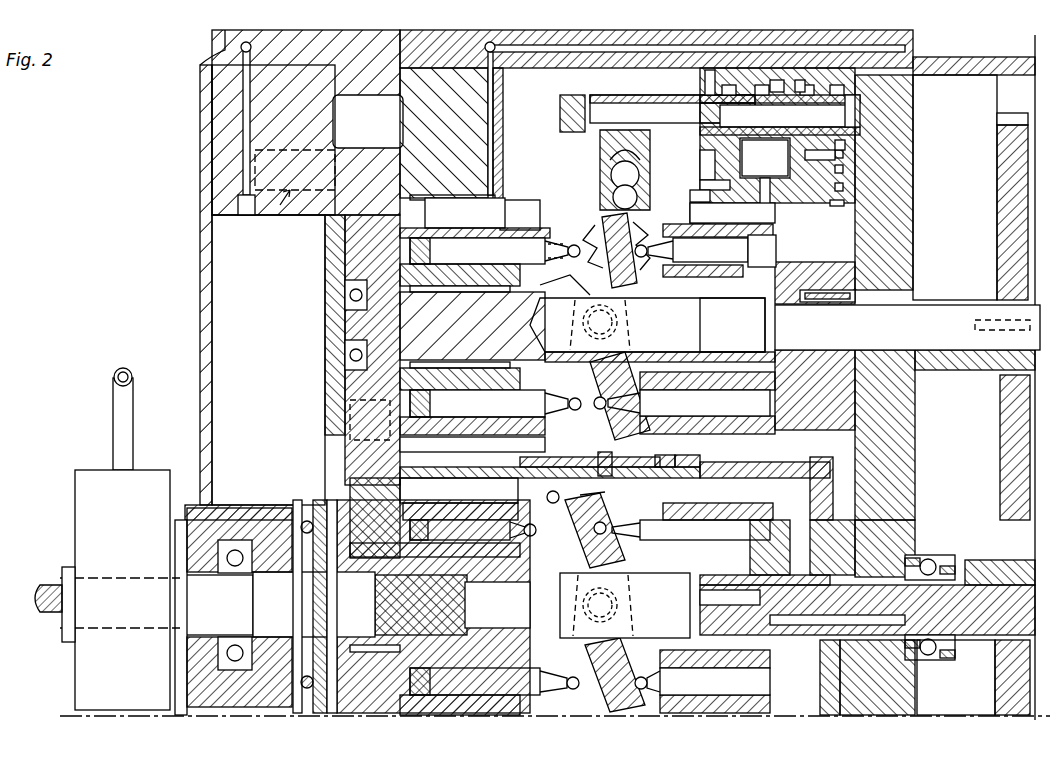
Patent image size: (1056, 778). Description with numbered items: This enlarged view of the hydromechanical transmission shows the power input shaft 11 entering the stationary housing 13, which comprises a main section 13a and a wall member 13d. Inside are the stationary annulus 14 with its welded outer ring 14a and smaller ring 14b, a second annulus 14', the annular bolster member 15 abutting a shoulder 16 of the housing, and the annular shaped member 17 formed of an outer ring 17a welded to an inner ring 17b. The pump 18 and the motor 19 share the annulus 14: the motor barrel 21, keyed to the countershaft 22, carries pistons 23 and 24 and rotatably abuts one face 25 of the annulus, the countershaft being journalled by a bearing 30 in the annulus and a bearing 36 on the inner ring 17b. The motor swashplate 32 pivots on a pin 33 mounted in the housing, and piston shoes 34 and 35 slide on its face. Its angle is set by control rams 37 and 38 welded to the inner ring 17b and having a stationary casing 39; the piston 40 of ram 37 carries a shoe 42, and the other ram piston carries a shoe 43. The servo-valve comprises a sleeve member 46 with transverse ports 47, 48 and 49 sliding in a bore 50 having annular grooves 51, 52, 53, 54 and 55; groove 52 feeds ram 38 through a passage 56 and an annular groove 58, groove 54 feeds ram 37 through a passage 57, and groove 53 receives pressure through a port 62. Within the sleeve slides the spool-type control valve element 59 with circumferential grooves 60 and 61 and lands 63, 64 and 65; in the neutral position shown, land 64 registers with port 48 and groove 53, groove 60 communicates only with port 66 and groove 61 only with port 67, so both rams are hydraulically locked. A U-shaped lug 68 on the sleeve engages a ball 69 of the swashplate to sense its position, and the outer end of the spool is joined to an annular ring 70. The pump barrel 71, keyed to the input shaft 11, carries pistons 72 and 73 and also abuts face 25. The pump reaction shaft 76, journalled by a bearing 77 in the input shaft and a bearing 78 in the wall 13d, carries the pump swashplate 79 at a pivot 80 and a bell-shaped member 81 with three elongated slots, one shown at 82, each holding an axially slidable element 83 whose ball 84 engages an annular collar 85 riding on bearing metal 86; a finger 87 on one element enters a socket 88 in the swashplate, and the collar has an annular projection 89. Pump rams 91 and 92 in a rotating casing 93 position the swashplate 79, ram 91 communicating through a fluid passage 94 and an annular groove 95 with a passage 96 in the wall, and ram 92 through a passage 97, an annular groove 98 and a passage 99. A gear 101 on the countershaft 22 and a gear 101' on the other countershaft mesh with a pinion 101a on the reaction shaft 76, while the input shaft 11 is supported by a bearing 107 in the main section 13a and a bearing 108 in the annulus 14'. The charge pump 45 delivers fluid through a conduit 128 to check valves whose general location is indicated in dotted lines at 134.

The power input shaft 11 is at (48, 566).
The housing 13 is at (192, 87).
The main section 13a is at (975, 57).
The wall member 13d is at (915, 158).
The annulus 14 is at (405, 350).
The outer ring 14a is at (350, 150).
The smaller ring 14b is at (330, 336).
The annulus 14' is at (404, 508).
The bolster member 15 is at (496, 85).
The shoulder 16 is at (415, 68).
The annular shaped member 17 is at (700, 150).
The outer ring 17a is at (690, 200).
The inner ring 17b is at (915, 230).
The pump 18 is at (730, 470).
The motor 19 is at (530, 228).
The rotatable barrel 21 is at (468, 250).
The countershaft 22 is at (932, 331).
The piston 23 is at (556, 243).
The piston 24 is at (432, 418).
The face 25 is at (475, 350).
The bearing 30 is at (343, 285).
The swashplate 32 is at (599, 221).
The pin 33 is at (618, 322).
The shoe 34 is at (565, 283).
The shoe 35 is at (585, 385).
The bearing 36 is at (855, 292).
The swashplate hydraulic control ram 37 is at (703, 210).
The swashplate hydraulic control ram 38 is at (703, 347).
The stationary casing 39 is at (732, 324).
The piston 40 is at (712, 255).
The shoe 42 is at (645, 244).
The shoe 43 is at (614, 385).
The charge pump 45 is at (88, 520).
The sleeve member 46 is at (625, 163).
The transverse port 47 is at (710, 68).
The transverse port 48 is at (809, 73).
The transverse port 49 is at (690, 84).
The bore 50 is at (762, 85).
The annular groove 51 is at (701, 165).
The annular groove 52 is at (732, 211).
The annular groove 53 is at (845, 170).
The annular groove 54 is at (845, 154).
The annular groove 55 is at (838, 85).
The passage 56 is at (845, 186).
The passage 57 is at (846, 204).
The annular groove 58 is at (790, 275).
The control valve element 59 is at (632, 112).
The circumferential groove 60 is at (730, 85).
The circumferential groove 61 is at (807, 85).
The port 62 is at (782, 73).
The land 63 is at (703, 121).
The land 64 is at (765, 158).
The land 65 is at (862, 112).
The port 66 is at (701, 179).
The port 67 is at (846, 146).
The lug 68 is at (600, 165).
The ball 69 is at (612, 193).
The annular ring 70 is at (560, 108).
The rotatable barrel 71 is at (460, 520).
The piston 72 is at (433, 606).
The piston 73 is at (490, 696).
The pump reaction shaft 76 is at (640, 640).
The bearing 77 is at (452, 605).
The bearing 78 is at (858, 508).
The swashplate 79 is at (587, 505).
The pivot 80 is at (618, 605).
The bell-shaped member 81 is at (456, 425).
The elongated slot 82 is at (665, 510).
The axially slidable element 83 is at (555, 460).
The ball 84 is at (655, 460).
The annular shaped collar 85 is at (684, 448).
The bearing metal 86 is at (520, 470).
The finger 87 is at (547, 497).
The socket 88 is at (590, 525).
The annular projection 89 is at (604, 452).
The hydraulic ram 91 is at (652, 400).
The hydraulic ram 92 is at (706, 696).
The casing 93 is at (720, 505).
The fluid passage 94 is at (730, 592).
The annular groove 95 is at (866, 570).
The passage 96 is at (900, 640).
The passage 97 is at (867, 610).
The annular groove 98 is at (898, 628).
The passage 99 is at (918, 576).
The gear 101 is at (986, 206).
The pinion 101a is at (1000, 520).
The gear 101' is at (973, 699).
The bearing 107 is at (242, 510).
The bearing 108 is at (360, 575).
The conduit 128 is at (250, 44).
The check valve location 134 is at (512, 176).